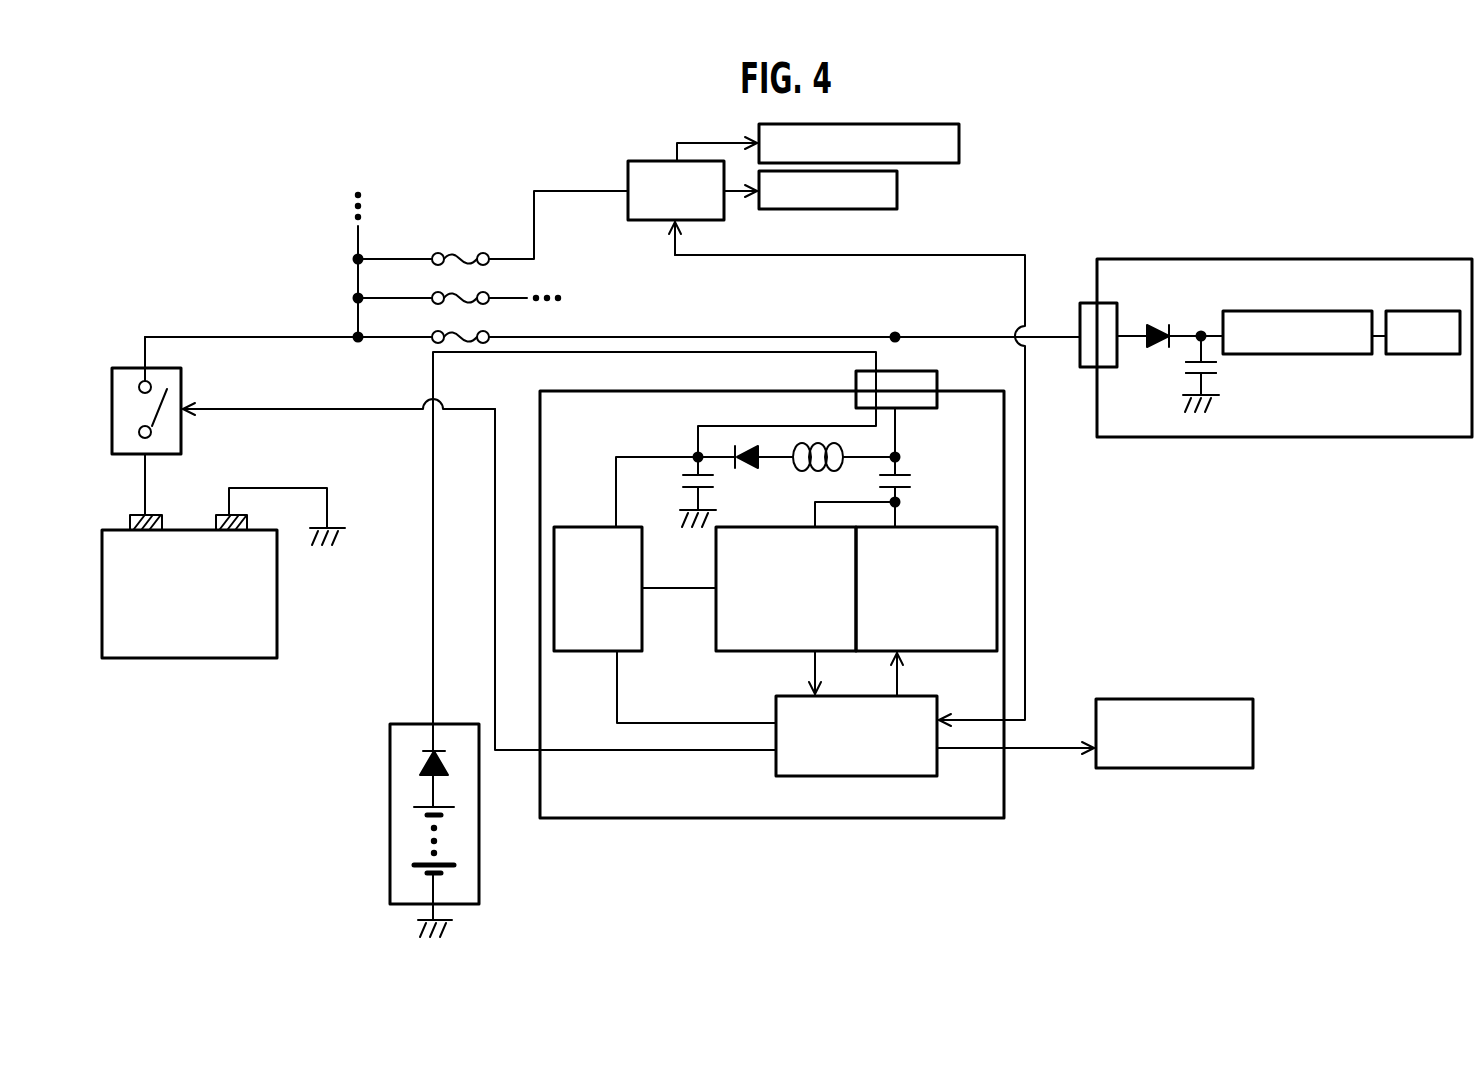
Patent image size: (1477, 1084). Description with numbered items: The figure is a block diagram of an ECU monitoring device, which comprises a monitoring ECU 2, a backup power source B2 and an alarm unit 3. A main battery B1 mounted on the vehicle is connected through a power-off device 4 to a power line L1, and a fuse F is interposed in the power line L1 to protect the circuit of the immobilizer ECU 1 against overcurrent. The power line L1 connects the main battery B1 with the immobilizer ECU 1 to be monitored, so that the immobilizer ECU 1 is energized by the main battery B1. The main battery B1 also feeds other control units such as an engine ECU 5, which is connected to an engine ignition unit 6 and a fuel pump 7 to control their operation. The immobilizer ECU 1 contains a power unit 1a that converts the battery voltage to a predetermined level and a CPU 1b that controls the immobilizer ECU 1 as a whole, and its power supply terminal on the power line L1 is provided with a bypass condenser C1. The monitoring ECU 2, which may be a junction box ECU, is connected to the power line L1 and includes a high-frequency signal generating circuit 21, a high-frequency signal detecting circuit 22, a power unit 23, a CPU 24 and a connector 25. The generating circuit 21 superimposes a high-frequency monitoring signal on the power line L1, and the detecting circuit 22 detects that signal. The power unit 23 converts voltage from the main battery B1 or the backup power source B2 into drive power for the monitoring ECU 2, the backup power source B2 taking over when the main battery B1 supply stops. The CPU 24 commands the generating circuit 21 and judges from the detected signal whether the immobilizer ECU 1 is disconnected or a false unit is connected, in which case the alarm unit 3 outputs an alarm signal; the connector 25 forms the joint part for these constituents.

The immobilizer ECU 1 is at (1232, 259).
The power unit 1a is at (1325, 355).
The central processing unit (CPU) 1b is at (1420, 355).
The monitoring ECU 2 is at (908, 820).
The alarm unit 3 is at (1162, 699).
The power-off device 4 is at (182, 438).
The engine ECU 5 is at (628, 177).
The engine ignition unit (ignitor) 6 is at (960, 140).
The fuel pump 7 is at (898, 190).
The high-frequency signal generating circuit 21 is at (918, 652).
The high-frequency signal detecting circuit 22 is at (790, 652).
The power unit 23 is at (642, 606).
The CPU 24 is at (776, 760).
The connector 25 is at (925, 409).
The main battery B1 is at (278, 606).
The backup power source B2 is at (480, 850).
The bypass condenser C1 is at (1183, 368).
The power line L1 is at (1064, 330).
The fuse F is at (460, 284).